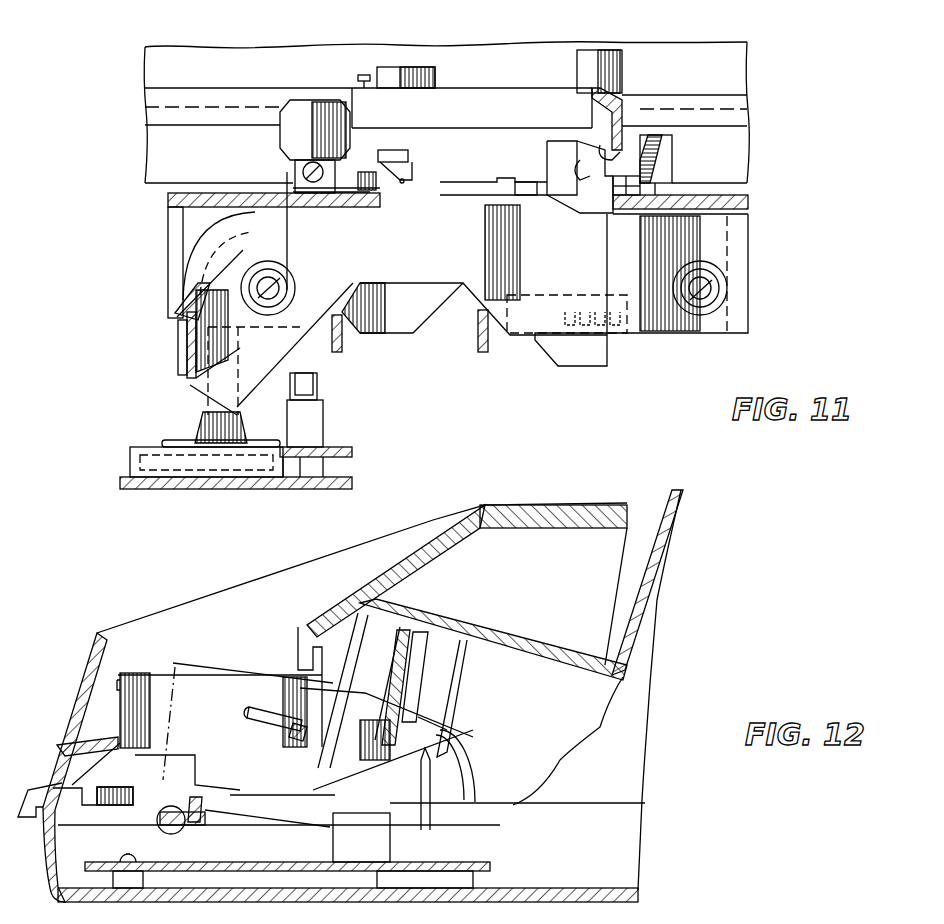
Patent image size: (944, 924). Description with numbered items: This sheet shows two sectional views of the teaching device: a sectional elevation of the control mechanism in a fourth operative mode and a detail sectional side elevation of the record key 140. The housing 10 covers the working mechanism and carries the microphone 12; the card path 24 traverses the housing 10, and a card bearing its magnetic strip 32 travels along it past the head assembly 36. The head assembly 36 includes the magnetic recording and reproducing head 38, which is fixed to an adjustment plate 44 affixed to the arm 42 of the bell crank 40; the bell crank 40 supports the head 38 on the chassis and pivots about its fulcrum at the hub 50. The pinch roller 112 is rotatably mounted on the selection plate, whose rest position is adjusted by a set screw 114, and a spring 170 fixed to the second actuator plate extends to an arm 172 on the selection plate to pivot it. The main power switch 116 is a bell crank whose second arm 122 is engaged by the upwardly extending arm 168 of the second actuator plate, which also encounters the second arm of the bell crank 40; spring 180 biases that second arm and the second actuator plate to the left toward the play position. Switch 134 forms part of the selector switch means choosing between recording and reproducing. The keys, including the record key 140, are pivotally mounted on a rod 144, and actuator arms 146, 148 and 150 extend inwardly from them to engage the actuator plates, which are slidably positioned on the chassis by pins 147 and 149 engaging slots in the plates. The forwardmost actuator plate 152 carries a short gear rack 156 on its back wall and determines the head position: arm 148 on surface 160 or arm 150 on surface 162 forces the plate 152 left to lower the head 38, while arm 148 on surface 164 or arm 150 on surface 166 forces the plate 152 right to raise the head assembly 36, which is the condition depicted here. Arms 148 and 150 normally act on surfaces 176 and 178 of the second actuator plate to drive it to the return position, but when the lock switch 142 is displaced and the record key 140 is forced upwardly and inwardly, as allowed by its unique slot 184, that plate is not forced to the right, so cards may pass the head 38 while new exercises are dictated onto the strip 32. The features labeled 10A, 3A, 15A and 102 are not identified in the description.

In FIG. 11, the housing 10 is at (196, 487).
In FIG. 12, the housing 10 is at (435, 518).
In FIG. 11, the housing portion 10A is at (335, 173).
In FIG. 11, the microphone 12 is at (287, 172).
In FIG. 12, the card path 24 is at (668, 488).
In FIG. 11, the magnetic strip 32 is at (718, 118).
In FIG. 11, the magnetic recording and reproducing head assembly 36 is at (443, 88).
In FIG. 11, the magnetic recording and reproducing head 38 is at (377, 67).
In FIG. 11, the bell crank 40 is at (572, 82).
In FIG. 11, the arm 42 is at (503, 88).
In FIG. 11, the adjustment plate 44 is at (622, 94).
In FIG. 11, the hub 50 is at (582, 50).
In FIG. 11, the lens mount 102 is at (280, 132).
In FIG. 11, the pinch roller 112 is at (395, 150).
In FIG. 11, the set screw 114 is at (300, 165).
In FIG. 11, the switch 116 is at (680, 168).
In FIG. 11, the second arm 122 is at (665, 152).
In FIG. 11, the switch 134 is at (325, 432).
In FIG. 12, the switch 134 is at (250, 815).
In FIG. 12, the record key 140 is at (148, 672).
In FIG. 11, the lock switch 142 is at (210, 432).
In FIG. 12, the lock switch 142 is at (430, 822).
In FIG. 12, the rod 144 is at (300, 720).
In FIG. 11, the actuator arm 146 is at (484, 352).
In FIG. 11, the pin 147 is at (695, 292).
In FIG. 11, the actuator arm 148 is at (342, 348).
In FIG. 11, the pin 149 is at (268, 288).
In FIG. 12, the pin 149 is at (388, 680).
In FIG. 11, the actuator arm 150 is at (180, 346).
In FIG. 11, the actuator plate 152 is at (748, 266).
In FIG. 12, the actuator plate 152 is at (420, 626).
In FIG. 11, the frame member 15A is at (422, 337).
In FIG. 12, the frame member 15A is at (430, 638).
In FIG. 11, the gear rack 156 is at (602, 312).
In FIG. 11, the actuator plate surface 160 is at (282, 375).
In FIG. 11, the actuator plate surface 162 is at (185, 300).
In FIG. 11, the actuator plate surface 164 is at (477, 286).
In FIG. 11, the actuator plate surface 166 is at (185, 378).
In FIG. 11, the upwardly extending arm 168 is at (580, 205).
In FIG. 11, the spring 170 is at (500, 178).
In FIG. 11, the arm 172 is at (525, 182).
In FIG. 11, the actuator plate surface 176 is at (362, 322).
In FIG. 11, the actuator plate surface 178 is at (185, 328).
In FIG. 11, the spring 180 is at (598, 150).
In FIG. 12, the slot 184 is at (246, 712).
In FIG. 11, the base plate 3A is at (752, 202).